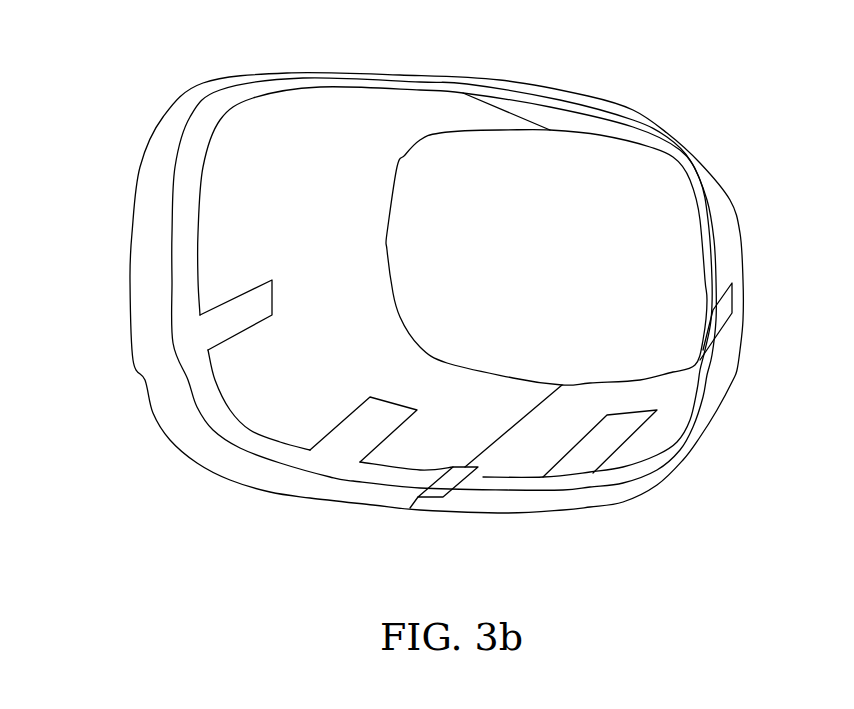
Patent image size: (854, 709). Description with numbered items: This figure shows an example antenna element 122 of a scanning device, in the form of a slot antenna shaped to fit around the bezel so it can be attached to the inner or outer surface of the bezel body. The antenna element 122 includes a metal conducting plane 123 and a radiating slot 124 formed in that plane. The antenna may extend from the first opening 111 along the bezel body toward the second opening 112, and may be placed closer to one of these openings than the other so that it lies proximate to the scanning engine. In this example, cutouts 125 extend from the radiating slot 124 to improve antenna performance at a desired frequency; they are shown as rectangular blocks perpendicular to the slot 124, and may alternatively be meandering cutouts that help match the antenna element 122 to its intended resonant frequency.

The first opening 111 is at (460, 350).
The second opening 112 is at (148, 451).
The antenna element 122 is at (588, 97).
The metal conducting plane 123 is at (317, 486).
The radiating slot 124 is at (186, 233).
The cutouts 125 is at (235, 325).